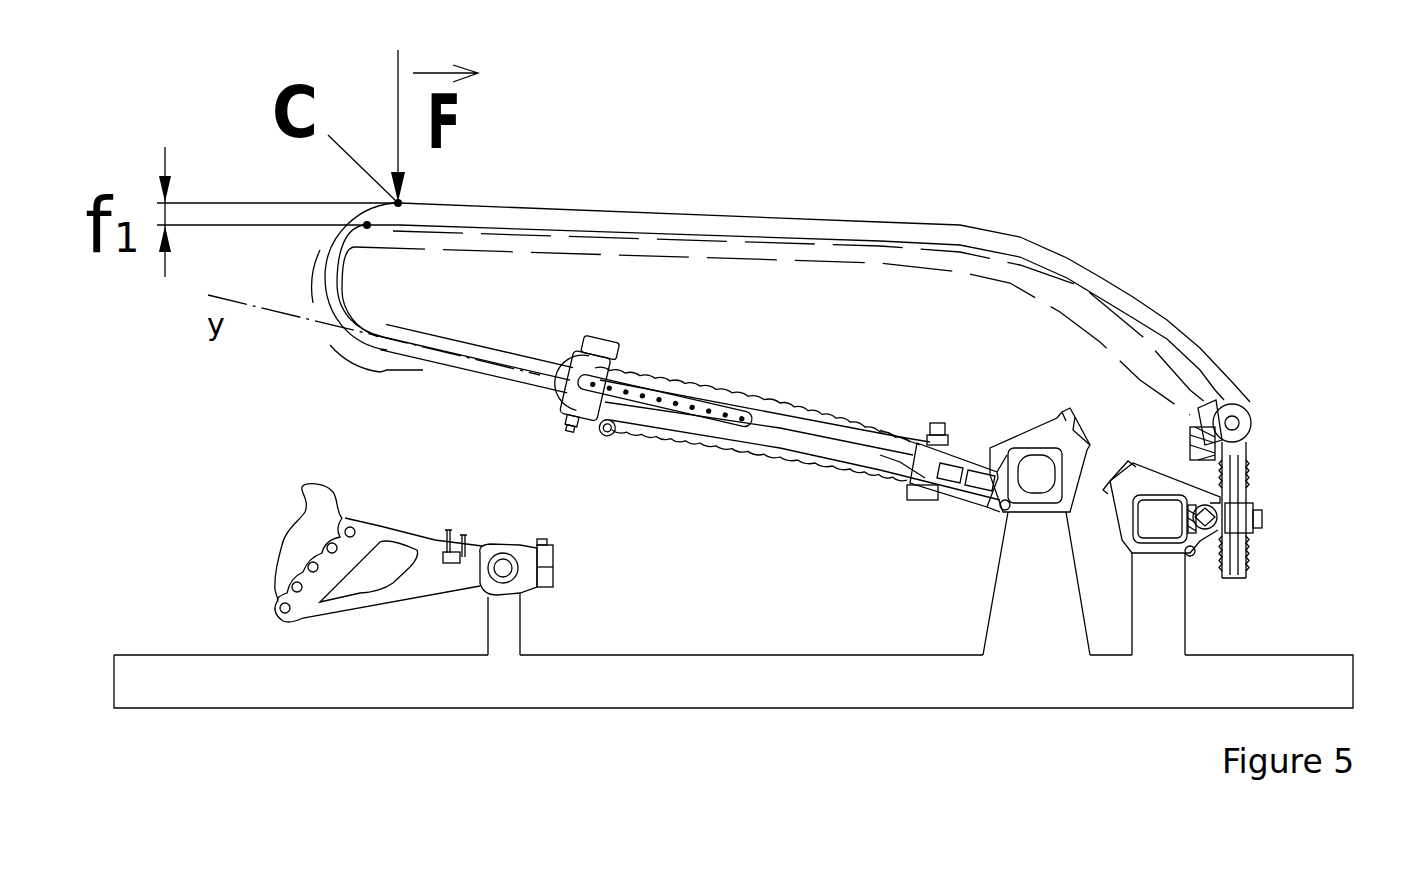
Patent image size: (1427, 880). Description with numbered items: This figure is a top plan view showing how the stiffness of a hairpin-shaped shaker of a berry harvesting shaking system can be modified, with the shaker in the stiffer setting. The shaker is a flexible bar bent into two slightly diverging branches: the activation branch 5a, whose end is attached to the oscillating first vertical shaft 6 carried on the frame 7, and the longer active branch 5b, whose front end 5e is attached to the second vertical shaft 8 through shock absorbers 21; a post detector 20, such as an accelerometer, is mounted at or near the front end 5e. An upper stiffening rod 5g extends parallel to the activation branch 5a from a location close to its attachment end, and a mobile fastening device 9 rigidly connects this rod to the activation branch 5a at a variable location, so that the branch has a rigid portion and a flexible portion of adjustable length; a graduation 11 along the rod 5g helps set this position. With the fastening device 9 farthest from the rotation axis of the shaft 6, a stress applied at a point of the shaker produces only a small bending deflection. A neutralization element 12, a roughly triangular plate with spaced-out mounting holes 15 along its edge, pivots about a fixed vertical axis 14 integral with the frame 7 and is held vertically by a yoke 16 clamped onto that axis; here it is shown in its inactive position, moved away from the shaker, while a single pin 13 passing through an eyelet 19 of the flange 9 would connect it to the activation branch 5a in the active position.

The activation branch 5a is at (770, 493).
The active branch 5b is at (558, 219).
The end of the active branch 5e is at (1218, 403).
The upper stiffening rod 5g is at (842, 447).
The first vertical shaft 6 is at (1038, 500).
The frame 7 is at (230, 688).
The second vertical shaft 8 is at (1153, 542).
The fastening device 9 is at (598, 357).
The graduation 11 is at (745, 402).
The neutralization element 12 is at (278, 597).
The pin 13 is at (437, 538).
The fixed vertical axis 14 is at (522, 590).
The mounting holes 15 is at (315, 527).
The yoke 16 is at (503, 548).
The eyelet 19 is at (615, 433).
The post detector 20 is at (1237, 423).
The shock absorbers 21 is at (1242, 487).